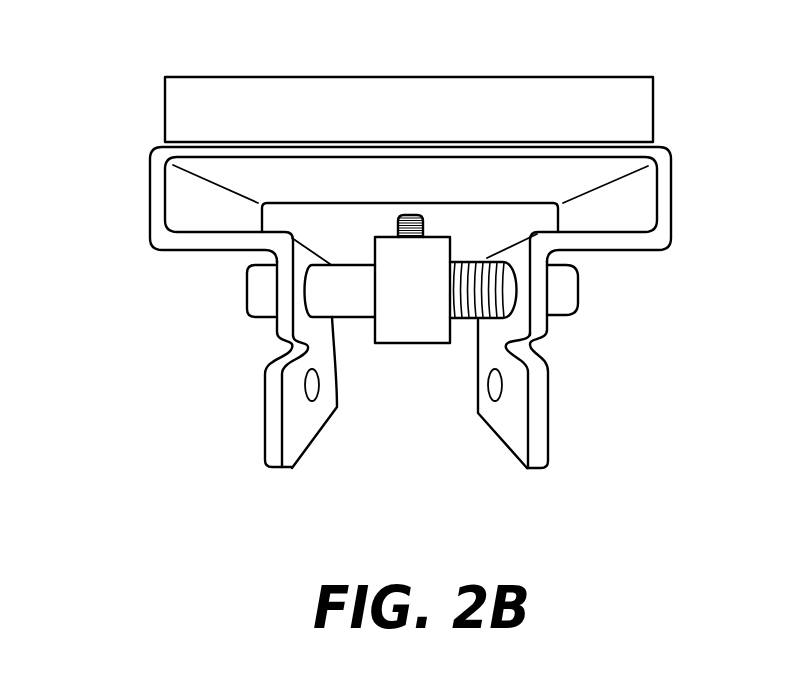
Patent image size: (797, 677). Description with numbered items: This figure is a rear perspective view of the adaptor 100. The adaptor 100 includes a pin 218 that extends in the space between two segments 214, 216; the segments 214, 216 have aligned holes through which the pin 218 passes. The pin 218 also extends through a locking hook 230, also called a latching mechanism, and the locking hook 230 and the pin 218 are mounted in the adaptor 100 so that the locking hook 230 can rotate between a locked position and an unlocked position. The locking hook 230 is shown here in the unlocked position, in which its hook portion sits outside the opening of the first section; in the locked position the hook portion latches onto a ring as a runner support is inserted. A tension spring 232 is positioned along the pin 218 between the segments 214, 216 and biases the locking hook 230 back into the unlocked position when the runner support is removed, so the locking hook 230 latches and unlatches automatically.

The adaptor 100 is at (126, 89).
The segment 214 is at (263, 438).
The segment 216 is at (548, 420).
The pin 218 is at (243, 290).
The locking hook 230 is at (405, 328).
The tension spring 232 is at (512, 313).